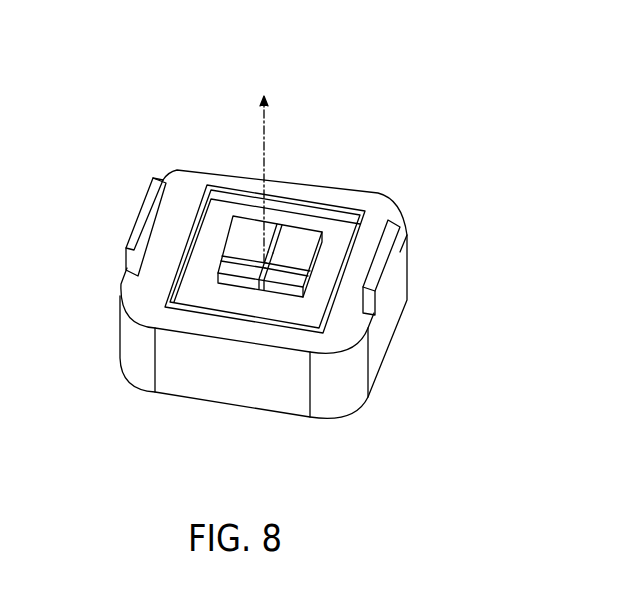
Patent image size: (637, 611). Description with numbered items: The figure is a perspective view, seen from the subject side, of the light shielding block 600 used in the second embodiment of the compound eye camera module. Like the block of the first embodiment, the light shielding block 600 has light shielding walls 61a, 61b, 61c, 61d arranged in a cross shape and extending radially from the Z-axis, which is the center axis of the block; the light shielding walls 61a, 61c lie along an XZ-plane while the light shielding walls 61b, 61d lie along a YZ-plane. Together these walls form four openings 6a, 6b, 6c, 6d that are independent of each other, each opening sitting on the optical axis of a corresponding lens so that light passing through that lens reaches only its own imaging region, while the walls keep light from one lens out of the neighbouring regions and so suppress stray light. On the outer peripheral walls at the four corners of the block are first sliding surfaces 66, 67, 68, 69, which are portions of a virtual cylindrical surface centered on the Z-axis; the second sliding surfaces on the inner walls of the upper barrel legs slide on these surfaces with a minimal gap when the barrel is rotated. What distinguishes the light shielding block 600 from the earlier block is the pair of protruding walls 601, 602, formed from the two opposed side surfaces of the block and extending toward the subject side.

The light shielding block 600 is at (136, 88).
The first sliding surface 66 is at (157, 177).
The protruding wall 601 is at (140, 220).
The protruding wall 602 is at (387, 253).
The first sliding surface 67 is at (383, 197).
The first sliding surface 68 is at (140, 360).
The first sliding surface 69 is at (343, 397).
The opening 6a is at (250, 247).
The opening 6b is at (290, 250).
The opening 6c is at (233, 290).
The opening 6d is at (281, 302).
The light shielding wall 61a is at (281, 250).
The light shielding wall 61b is at (307, 232).
The light shielding wall 61c is at (256, 295).
The light shielding wall 61d is at (232, 238).